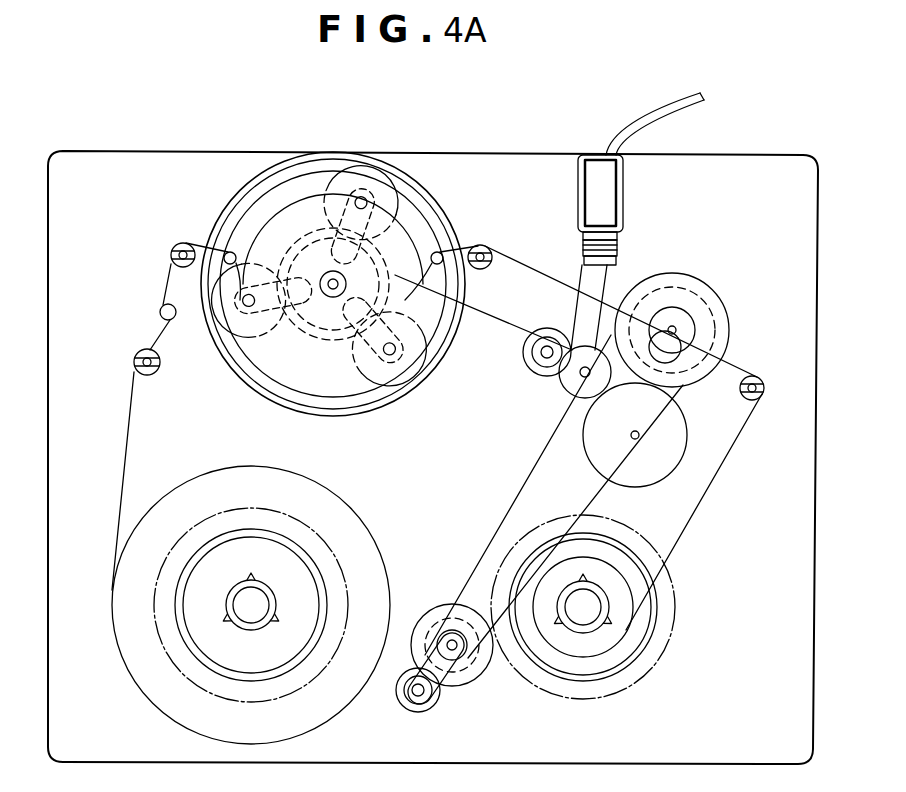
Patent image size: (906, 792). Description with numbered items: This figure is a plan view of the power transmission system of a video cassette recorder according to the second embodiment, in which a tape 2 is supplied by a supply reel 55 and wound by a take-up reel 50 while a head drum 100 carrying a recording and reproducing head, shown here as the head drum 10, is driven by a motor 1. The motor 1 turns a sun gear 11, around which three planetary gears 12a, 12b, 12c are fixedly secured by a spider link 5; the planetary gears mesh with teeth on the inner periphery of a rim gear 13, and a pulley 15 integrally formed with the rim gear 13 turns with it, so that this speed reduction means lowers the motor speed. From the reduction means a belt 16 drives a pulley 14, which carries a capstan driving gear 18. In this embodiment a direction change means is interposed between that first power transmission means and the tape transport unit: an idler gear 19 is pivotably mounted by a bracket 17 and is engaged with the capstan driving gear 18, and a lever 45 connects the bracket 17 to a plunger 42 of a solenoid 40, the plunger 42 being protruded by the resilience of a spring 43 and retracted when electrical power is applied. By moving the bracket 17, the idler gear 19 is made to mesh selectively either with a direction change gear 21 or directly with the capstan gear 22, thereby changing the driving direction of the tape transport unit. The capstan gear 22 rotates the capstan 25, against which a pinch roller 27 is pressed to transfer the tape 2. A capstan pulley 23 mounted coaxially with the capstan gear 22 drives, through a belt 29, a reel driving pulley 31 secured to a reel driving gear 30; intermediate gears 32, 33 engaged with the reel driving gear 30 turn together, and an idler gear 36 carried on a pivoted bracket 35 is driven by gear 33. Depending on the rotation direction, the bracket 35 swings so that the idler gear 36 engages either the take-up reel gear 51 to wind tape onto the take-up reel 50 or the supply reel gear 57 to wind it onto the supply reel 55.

The motor 1 is at (285, 207).
The tape 2 is at (122, 470).
The spider link 5 is at (285, 248).
The head drum 10 is at (427, 172).
The sun gear 11 is at (460, 236).
The planetary gear 12a is at (400, 372).
The planetary gear 12b is at (232, 318).
The planetary gear 12c is at (370, 183).
The rim gear 13 is at (250, 380).
The pulley 14 is at (530, 327).
The pulley 15 is at (335, 330).
The belt 16 is at (480, 358).
The bracket 17 is at (540, 372).
The capstan driving gear 18 is at (530, 352).
The idler gear 19 is at (567, 392).
The direction change gear 21 is at (668, 458).
The capstan gear 22 is at (730, 328).
The capstan pulley 23 is at (690, 293).
The capstan 25 is at (676, 327).
The pinch roller 27 is at (688, 390).
The belt 29 is at (512, 505).
The reel driving gear 30 is at (478, 668).
The reel driving pulley 31 is at (456, 682).
The intermediate gear 32 is at (428, 705).
The intermediate gear 33 is at (400, 697).
The bracket 35 is at (420, 633).
The idler gear 36 is at (440, 608).
The solenoid 40 is at (625, 190).
The plunger 42 is at (612, 250).
The spring 43 is at (617, 236).
The lever 45 is at (592, 298).
The take-up reel 50 is at (612, 638).
The take-up reel gear 51 is at (617, 690).
The supply reel 55 is at (213, 643).
The supply reel gear 57 is at (277, 688).
The head drum 100 is at (400, 240).